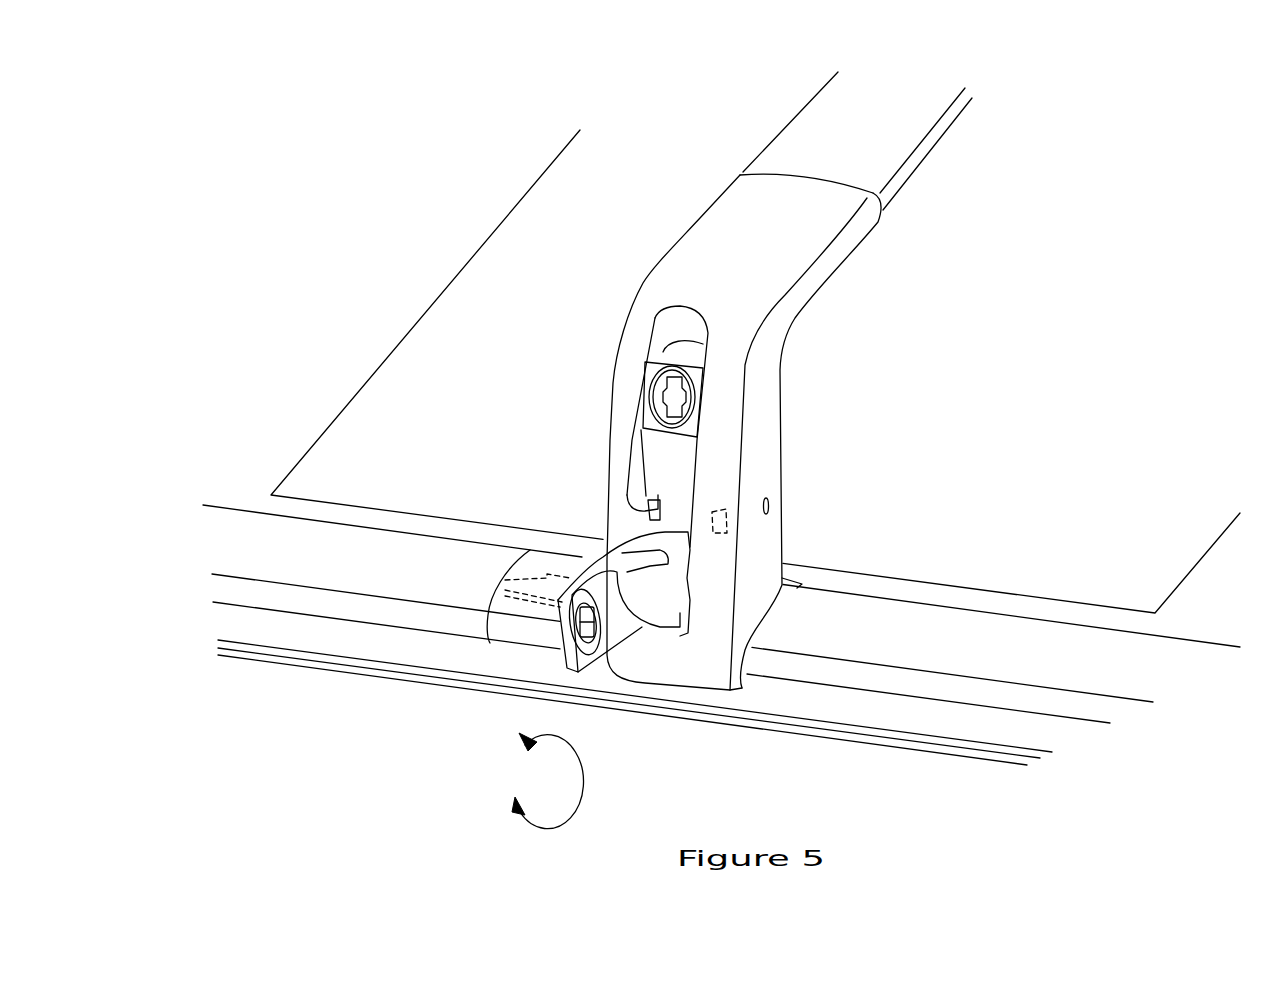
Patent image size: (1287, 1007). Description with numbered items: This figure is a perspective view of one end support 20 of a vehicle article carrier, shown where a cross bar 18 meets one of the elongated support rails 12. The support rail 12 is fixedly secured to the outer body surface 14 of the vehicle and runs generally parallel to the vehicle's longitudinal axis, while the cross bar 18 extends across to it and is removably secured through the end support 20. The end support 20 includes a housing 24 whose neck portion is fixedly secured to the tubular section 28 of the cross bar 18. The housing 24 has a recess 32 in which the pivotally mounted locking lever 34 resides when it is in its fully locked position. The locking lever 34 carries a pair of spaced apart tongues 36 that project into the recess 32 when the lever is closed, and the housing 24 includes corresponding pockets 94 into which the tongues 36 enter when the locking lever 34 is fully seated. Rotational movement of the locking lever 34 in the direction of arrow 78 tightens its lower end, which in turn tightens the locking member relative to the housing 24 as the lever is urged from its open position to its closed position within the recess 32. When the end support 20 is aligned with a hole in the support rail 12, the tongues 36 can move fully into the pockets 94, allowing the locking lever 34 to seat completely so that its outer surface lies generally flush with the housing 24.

The support rail 12 is at (503, 683).
The outer body surface 14 is at (303, 365).
The cross bar 18 is at (778, 88).
The end support 20 is at (719, 452).
The housing 24 is at (731, 208).
The tubular section 28 is at (896, 108).
The recess 32 is at (650, 450).
The locking lever 34 is at (577, 673).
The tongues 36 is at (623, 565).
The arrow 78 is at (587, 805).
The pockets 94 is at (637, 510).